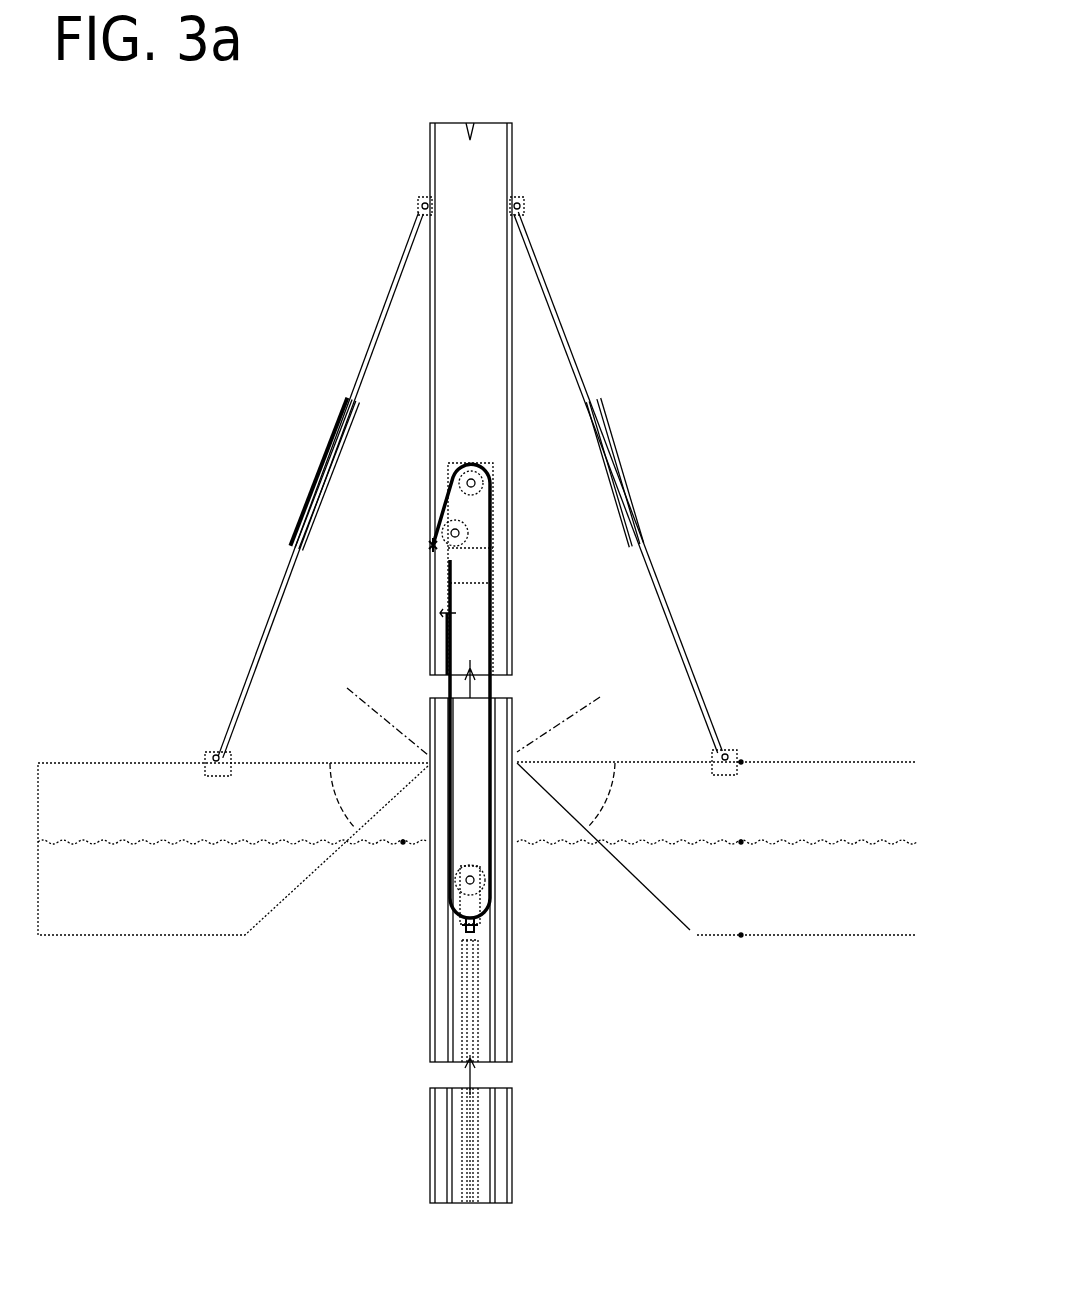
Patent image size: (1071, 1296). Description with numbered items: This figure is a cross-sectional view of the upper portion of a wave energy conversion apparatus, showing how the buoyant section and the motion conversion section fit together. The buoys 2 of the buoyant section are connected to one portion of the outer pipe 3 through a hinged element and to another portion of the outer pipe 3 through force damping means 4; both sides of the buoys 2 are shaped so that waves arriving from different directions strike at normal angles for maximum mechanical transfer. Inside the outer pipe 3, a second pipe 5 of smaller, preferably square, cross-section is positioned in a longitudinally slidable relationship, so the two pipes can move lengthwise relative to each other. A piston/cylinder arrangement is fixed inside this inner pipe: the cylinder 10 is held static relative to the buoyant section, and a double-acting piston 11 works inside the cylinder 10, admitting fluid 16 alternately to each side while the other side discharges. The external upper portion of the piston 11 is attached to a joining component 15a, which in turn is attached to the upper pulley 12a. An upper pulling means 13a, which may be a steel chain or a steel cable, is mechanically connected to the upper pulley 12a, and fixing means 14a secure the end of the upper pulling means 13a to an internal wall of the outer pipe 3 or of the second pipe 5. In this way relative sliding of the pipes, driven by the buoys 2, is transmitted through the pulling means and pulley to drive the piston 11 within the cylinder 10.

The buoys 2 is at (682, 810).
The outer pipe 3 is at (513, 992).
The force damping means 4 is at (303, 518).
The second pipe 5 is at (494, 1023).
The cylinder 10 is at (462, 1018).
The double-acting piston 11 is at (462, 978).
The upper pulley 12a is at (428, 760).
The upper pulling means 13a is at (494, 527).
The fixing means 14a is at (448, 548).
The joining component 15a is at (470, 914).
The fluid 16 is at (480, 1156).